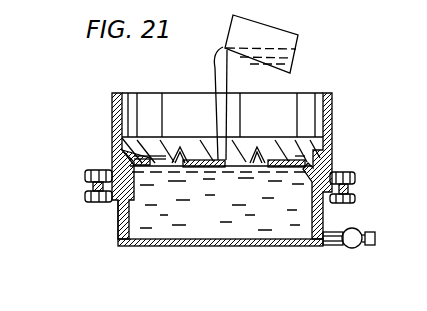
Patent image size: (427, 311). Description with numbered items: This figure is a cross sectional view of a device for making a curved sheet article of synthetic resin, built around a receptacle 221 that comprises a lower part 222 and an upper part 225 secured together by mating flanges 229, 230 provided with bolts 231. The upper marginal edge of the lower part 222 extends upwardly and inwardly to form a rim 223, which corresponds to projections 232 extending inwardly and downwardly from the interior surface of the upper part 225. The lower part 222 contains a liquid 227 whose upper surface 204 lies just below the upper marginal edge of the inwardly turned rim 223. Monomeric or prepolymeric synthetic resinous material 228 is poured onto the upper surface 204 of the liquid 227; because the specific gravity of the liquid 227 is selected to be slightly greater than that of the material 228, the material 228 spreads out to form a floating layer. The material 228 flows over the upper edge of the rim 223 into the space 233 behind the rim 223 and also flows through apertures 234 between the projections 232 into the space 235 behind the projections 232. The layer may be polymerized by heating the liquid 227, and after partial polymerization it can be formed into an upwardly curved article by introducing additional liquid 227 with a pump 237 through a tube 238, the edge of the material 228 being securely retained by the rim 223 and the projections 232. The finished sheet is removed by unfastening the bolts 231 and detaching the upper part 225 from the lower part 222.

The upper surface 204 is at (148, 173).
The receptacle 221 is at (88, 137).
The lower part 222 is at (118, 246).
The rim 223 is at (118, 207).
The upper part 225 is at (112, 93).
The liquid 227 is at (192, 229).
The synthetic resinous material 228 is at (280, 60).
The mating flange 229 is at (350, 186).
The mating flange 230 is at (350, 196).
The bolt 231 is at (340, 173).
The projection 232 is at (233, 152).
The space 233 is at (113, 165).
The aperture 234 is at (196, 140).
The space 235 is at (112, 152).
The pump 237 is at (362, 246).
The tube 238 is at (336, 246).